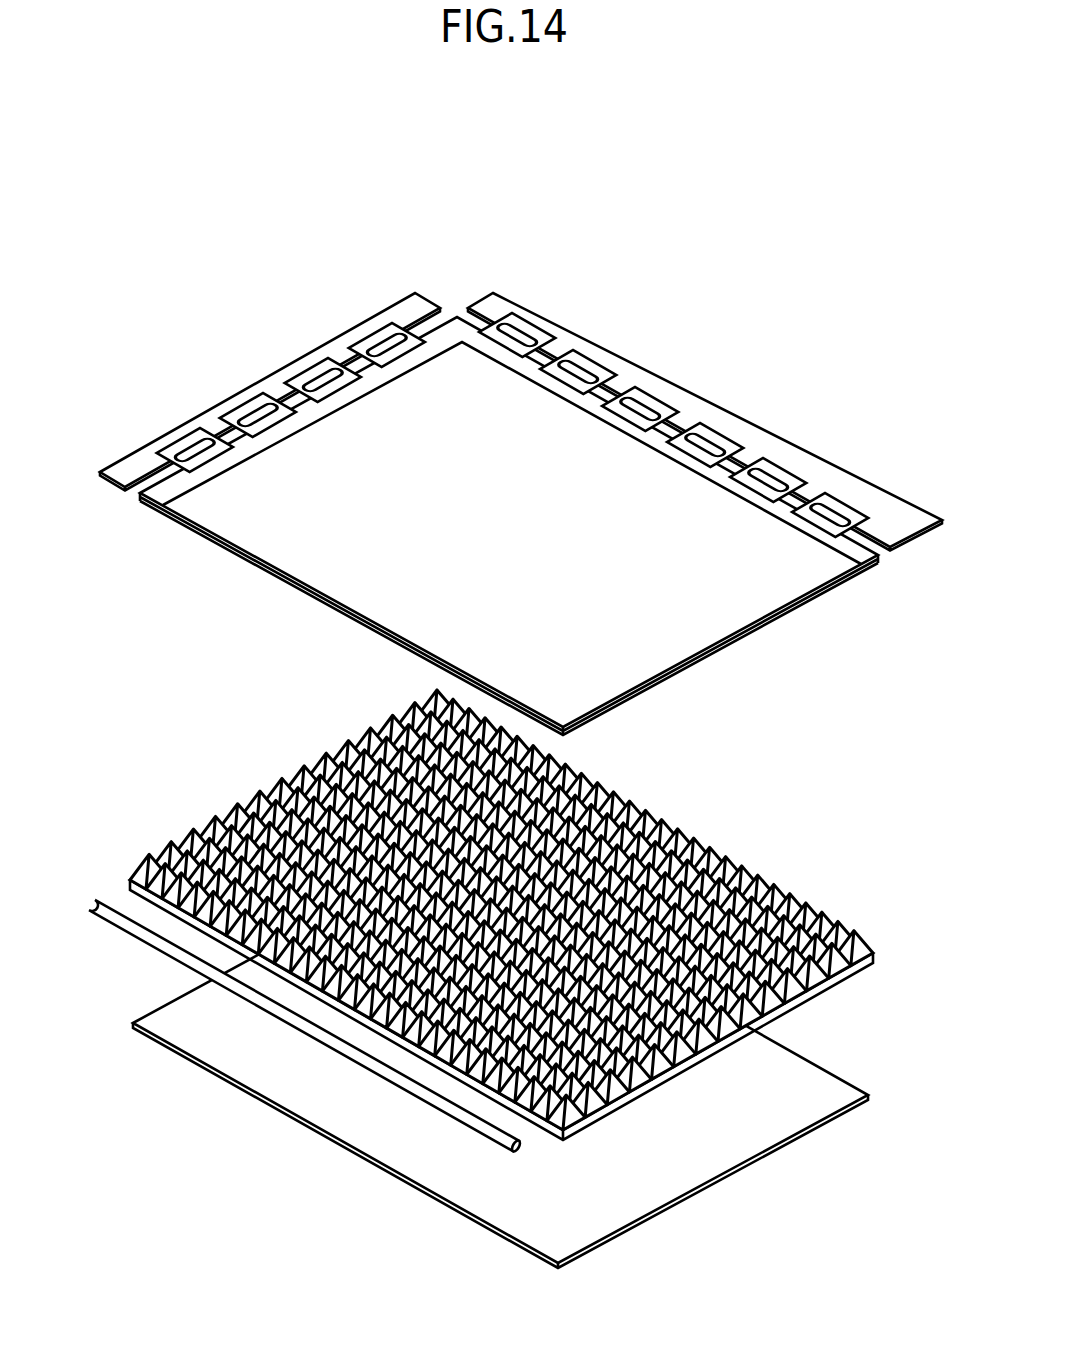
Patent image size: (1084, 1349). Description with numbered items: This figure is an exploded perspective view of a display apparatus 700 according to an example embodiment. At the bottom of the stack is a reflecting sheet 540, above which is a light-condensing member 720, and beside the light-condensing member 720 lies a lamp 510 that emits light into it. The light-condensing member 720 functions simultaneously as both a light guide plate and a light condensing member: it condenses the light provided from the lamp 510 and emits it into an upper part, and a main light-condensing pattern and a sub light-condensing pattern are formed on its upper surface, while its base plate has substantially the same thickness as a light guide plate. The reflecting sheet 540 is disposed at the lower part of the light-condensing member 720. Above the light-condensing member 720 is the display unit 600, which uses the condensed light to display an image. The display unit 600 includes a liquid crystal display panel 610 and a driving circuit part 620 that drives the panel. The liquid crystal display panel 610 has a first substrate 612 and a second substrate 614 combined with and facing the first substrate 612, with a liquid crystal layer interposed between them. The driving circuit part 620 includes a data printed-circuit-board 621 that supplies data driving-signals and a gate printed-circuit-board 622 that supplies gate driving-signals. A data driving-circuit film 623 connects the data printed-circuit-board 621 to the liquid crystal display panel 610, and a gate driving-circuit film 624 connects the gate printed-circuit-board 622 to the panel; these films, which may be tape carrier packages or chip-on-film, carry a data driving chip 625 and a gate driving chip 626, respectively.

The display apparatus 700 is at (506, 238).
The display unit 600 is at (205, 350).
The liquid crystal display panel 610 is at (83, 538).
The first substrate 612 is at (165, 504).
The second substrate 614 is at (227, 517).
The driving circuit part 620 is at (582, 337).
The data printed-circuit-board 621 is at (807, 458).
The gate printed-circuit-board 622 is at (402, 312).
The data driving-circuit film 623 is at (663, 402).
The gate driving-circuit film 624 is at (375, 338).
The data driving chip 625 is at (623, 403).
The gate driving chip 626 is at (320, 375).
The light-condensing member 720 is at (162, 808).
The lamp 510 is at (160, 943).
The reflecting sheet 540 is at (217, 1058).